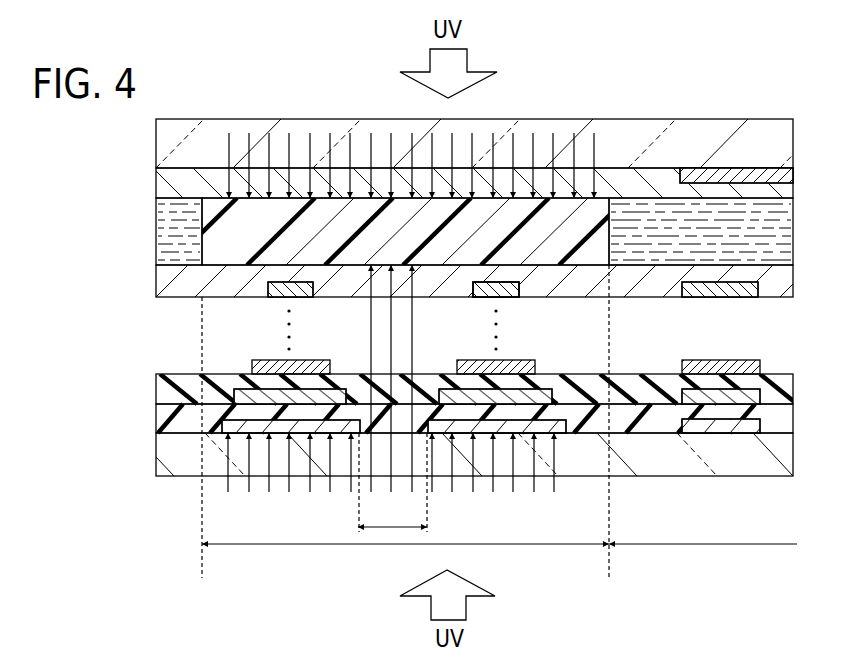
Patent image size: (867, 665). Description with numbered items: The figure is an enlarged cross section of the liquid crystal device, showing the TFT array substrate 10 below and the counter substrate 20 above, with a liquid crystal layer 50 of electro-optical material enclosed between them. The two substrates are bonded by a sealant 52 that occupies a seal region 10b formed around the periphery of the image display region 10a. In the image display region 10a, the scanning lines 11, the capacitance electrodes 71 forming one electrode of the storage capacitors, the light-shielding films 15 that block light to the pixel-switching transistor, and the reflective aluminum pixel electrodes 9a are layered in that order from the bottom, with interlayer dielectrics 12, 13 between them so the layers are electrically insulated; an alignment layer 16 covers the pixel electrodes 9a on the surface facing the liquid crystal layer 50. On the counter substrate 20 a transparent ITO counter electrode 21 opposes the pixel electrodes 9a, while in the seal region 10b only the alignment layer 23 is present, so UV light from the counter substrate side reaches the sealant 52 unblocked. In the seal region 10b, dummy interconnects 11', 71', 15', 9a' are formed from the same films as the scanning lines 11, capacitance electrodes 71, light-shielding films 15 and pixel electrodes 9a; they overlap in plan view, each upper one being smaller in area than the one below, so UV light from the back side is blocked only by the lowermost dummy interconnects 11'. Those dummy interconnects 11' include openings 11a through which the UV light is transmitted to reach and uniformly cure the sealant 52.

The counter substrate 20 is at (156, 139).
The alignment layer 23 is at (156, 185).
The counter electrode 21 is at (793, 179).
The liquid crystal layer 50 is at (790, 233).
The sealant 52 is at (212, 239).
The alignment layer 16 is at (156, 281).
The pixel electrodes 9a is at (551, 287).
The dummy interconnects 9a' is at (504, 310).
The light-shielding films 15 is at (758, 363).
The dummy interconnects 15' is at (411, 349).
The capacitance electrodes 71 is at (758, 395).
The dummy interconnects 71' is at (417, 390).
The scanning lines 11 is at (758, 423).
The dummy interconnects 11' is at (419, 420).
The interlayer dielectric 13 is at (156, 388).
The interlayer dielectric 12 is at (156, 415).
The TFT array substrate 10 is at (156, 452).
The openings 11a is at (392, 513).
The seal region 10b is at (405, 532).
The image display region 10a is at (703, 532).